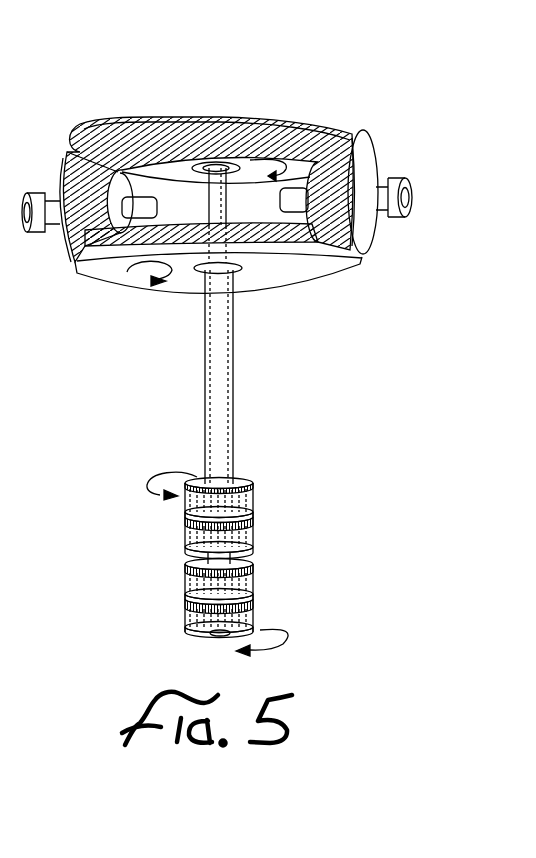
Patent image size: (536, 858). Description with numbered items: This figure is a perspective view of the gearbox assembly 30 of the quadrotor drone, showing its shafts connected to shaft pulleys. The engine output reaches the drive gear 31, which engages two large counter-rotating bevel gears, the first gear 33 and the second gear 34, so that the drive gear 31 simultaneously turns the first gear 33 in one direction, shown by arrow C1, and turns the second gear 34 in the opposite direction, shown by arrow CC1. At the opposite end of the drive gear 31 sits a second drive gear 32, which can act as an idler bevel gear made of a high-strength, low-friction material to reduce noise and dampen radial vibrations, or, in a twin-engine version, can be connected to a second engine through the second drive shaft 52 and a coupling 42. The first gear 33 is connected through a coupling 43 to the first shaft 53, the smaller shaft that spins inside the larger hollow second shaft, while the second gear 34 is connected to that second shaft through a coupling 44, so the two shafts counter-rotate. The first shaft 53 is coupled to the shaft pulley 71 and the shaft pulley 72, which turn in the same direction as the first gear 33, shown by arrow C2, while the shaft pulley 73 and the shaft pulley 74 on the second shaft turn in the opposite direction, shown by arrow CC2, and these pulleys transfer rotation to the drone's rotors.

The gearbox assembly 30 is at (358, 376).
The drive gear 31 is at (82, 250).
The second drive gear 32 is at (328, 178).
The first gear 33 is at (120, 170).
The second gear 34 is at (312, 270).
The coupling 42 is at (397, 177).
The coupling 43 is at (213, 162).
The coupling 44 is at (243, 272).
The second drive shaft 52 is at (378, 202).
The first shaft 53 is at (192, 207).
The shaft pulley 71 is at (198, 581).
The shaft pulley 72 is at (200, 615).
The shaft pulley 73 is at (243, 533).
The shaft pulley 74 is at (247, 502).
The arrow C1 is at (281, 165).
The arrow C2 is at (285, 648).
The arrow CC1 is at (137, 277).
The arrow CC2 is at (160, 488).